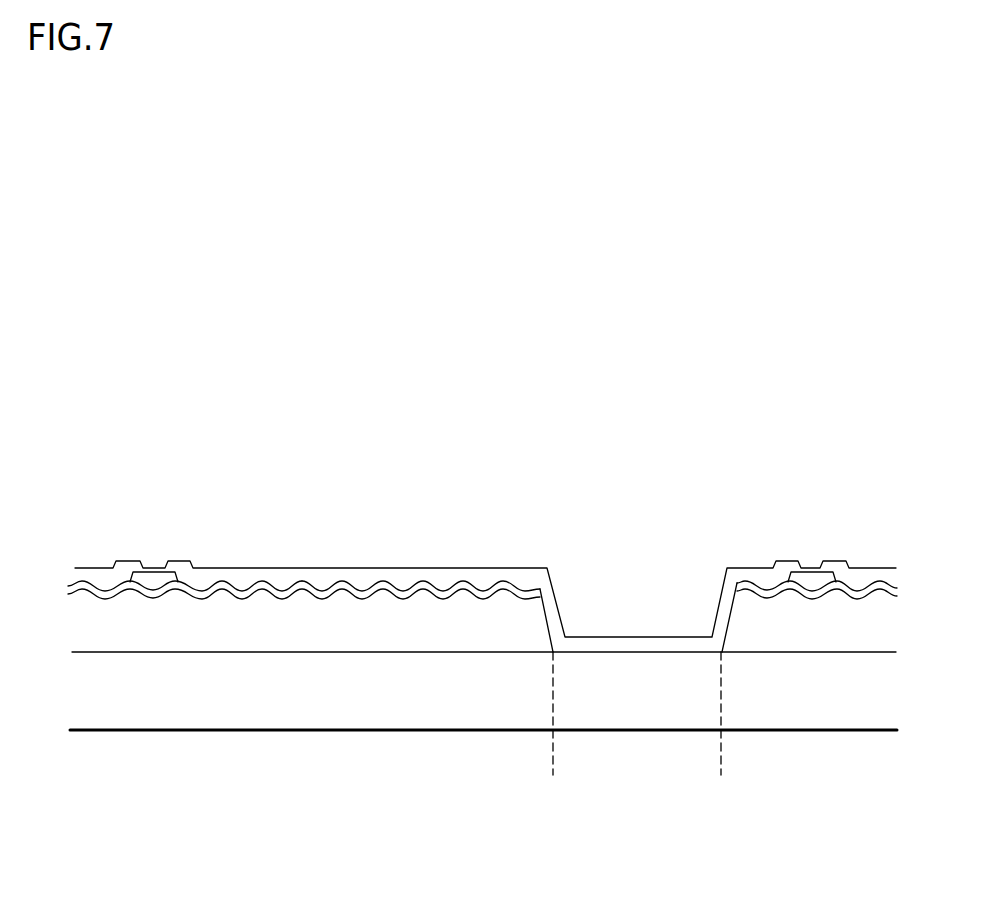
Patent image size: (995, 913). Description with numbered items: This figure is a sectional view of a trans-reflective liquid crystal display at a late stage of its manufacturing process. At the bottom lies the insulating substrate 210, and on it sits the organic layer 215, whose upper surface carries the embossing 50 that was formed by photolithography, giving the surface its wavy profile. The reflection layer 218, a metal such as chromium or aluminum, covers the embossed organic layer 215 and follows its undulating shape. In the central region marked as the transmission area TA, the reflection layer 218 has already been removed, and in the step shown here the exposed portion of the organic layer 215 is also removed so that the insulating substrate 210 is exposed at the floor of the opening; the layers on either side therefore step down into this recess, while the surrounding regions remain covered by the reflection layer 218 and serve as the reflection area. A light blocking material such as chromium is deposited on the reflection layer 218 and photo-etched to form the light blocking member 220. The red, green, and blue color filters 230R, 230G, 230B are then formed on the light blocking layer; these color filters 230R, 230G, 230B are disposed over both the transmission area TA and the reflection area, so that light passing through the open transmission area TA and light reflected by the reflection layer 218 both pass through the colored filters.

The insulating substrate 210 is at (88, 683).
The organic layer 215 is at (88, 624).
The reflection layer 218 is at (72, 582).
The light blocking member 220 is at (808, 575).
The red color filter 230R is at (97, 575).
The green color filter 230G is at (315, 577).
The blue color filter 230B is at (862, 577).
The embossing 50 is at (378, 595).
The transmission area TA is at (721, 756).